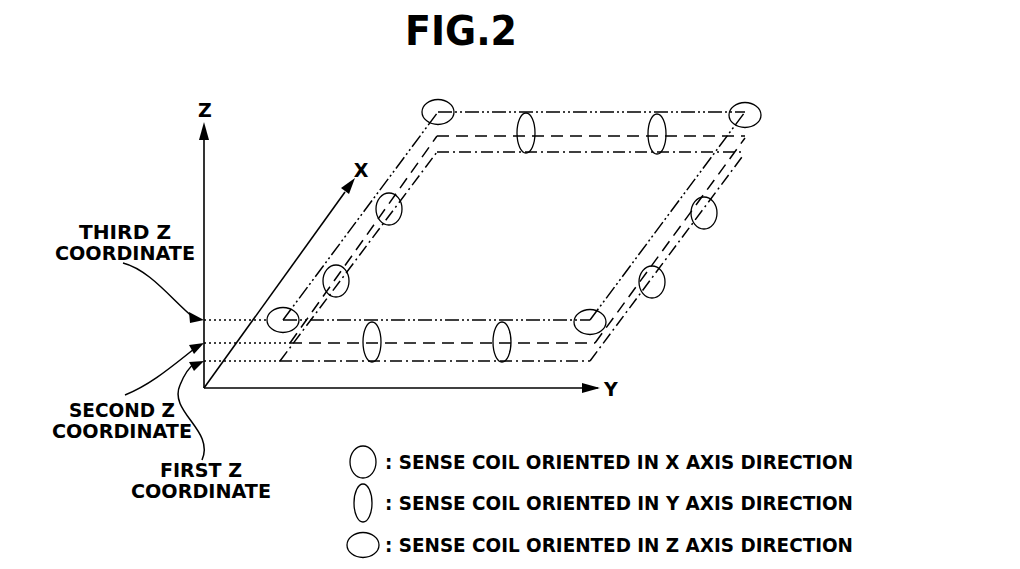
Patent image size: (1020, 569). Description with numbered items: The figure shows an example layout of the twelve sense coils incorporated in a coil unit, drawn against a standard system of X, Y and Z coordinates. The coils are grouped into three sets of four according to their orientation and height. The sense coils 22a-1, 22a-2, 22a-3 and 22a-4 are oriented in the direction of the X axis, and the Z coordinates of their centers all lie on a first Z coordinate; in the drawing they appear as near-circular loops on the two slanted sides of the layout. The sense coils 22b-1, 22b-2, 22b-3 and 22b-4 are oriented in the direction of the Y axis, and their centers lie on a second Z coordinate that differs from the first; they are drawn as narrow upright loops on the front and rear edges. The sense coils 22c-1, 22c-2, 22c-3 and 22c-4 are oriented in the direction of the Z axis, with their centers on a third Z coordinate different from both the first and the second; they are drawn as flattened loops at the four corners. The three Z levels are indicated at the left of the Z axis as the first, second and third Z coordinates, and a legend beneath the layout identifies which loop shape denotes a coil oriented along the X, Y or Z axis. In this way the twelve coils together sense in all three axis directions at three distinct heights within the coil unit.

The sense coil 22a-1 is at (403, 209).
The sense coil 22a-2 is at (350, 282).
The sense coil 22a-3 is at (665, 284).
The sense coil 22a-4 is at (718, 213).
The sense coil 22b-1 is at (658, 114).
The sense coil 22b-2 is at (528, 113).
The sense coil 22b-3 is at (372, 362).
The sense coil 22b-4 is at (502, 362).
The sense coil 22c-1 is at (606, 318).
The sense coil 22c-2 is at (762, 115).
The sense coil 22c-3 is at (423, 110).
The sense coil 22c-4 is at (282, 307).